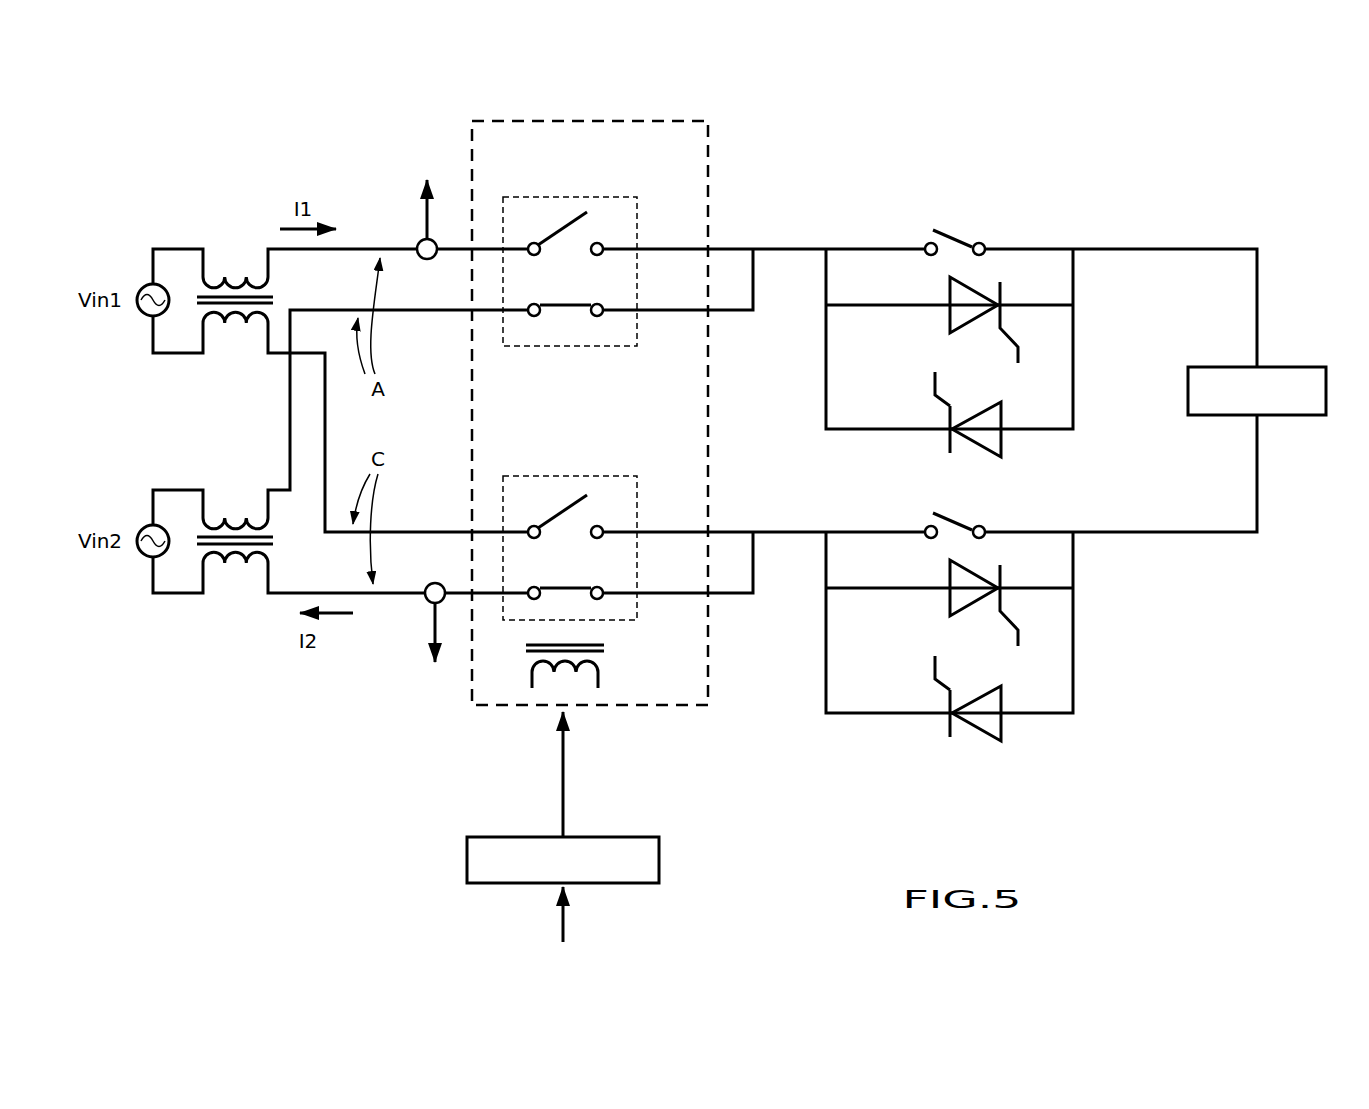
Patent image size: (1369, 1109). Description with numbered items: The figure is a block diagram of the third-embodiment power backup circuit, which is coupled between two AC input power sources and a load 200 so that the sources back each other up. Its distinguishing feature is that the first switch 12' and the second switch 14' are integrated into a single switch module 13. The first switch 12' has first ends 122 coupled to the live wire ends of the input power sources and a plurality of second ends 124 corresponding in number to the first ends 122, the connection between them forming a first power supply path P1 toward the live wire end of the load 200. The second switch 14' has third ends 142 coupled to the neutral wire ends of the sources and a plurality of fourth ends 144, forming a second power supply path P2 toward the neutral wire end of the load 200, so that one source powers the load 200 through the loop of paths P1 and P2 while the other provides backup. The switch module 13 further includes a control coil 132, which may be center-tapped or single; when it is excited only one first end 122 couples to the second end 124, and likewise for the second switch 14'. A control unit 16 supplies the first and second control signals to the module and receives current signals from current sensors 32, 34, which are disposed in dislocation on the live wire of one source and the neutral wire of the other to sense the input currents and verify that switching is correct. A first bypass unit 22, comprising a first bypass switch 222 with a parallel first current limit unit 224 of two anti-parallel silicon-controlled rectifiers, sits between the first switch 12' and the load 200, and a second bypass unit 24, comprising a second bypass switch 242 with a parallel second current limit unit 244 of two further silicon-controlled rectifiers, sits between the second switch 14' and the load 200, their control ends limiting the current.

The current sensor 32 is at (418, 245).
The current sensor 34 is at (426, 601).
The switch module 13 is at (714, 148).
The first switch 12' is at (591, 475).
The second switch 14' is at (637, 609).
The first end 122 is at (532, 236).
The second end 124 is at (601, 236).
The third end 142 is at (532, 519).
The fourth end 144 is at (601, 519).
The first power supply path P1 is at (578, 300).
The second power supply path P2 is at (578, 583).
The control coil 132 is at (618, 663).
The control unit 16 is at (477, 860).
The first bypass unit 22 is at (1101, 190).
The first bypass switch 222 is at (972, 220).
The first current limit unit 224 is at (1095, 357).
The second bypass unit 24 is at (1136, 714).
The second bypass switch 242 is at (979, 513).
The second current limit unit 244 is at (1094, 641).
The load 200 is at (1297, 377).